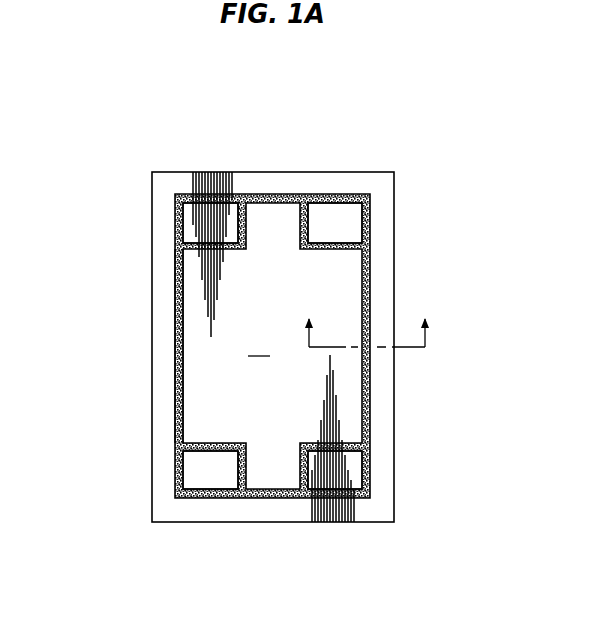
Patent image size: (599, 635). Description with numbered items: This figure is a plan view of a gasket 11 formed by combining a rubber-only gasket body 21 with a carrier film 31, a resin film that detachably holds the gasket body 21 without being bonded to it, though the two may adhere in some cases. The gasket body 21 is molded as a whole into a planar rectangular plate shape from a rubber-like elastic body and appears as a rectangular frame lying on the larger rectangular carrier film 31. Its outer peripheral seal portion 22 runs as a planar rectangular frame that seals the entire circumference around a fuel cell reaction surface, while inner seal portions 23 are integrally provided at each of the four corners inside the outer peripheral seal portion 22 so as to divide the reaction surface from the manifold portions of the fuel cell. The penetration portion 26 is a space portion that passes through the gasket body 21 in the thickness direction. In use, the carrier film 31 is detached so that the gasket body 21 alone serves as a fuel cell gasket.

The gasket 11 is at (136, 175).
The gasket body 21 is at (367, 208).
The outer peripheral seal portion 22 is at (178, 323).
The inner seal portion 23 is at (197, 247).
The penetration portion 26 is at (217, 177).
The carrier film 31 is at (383, 470).